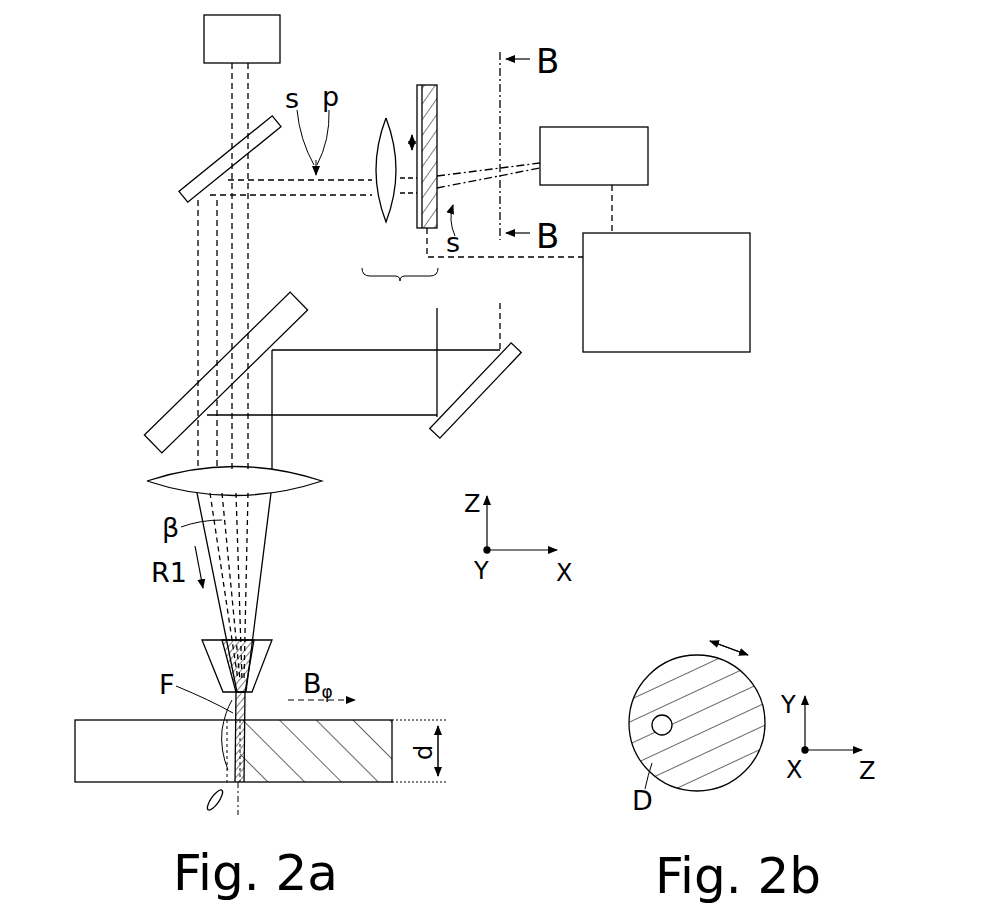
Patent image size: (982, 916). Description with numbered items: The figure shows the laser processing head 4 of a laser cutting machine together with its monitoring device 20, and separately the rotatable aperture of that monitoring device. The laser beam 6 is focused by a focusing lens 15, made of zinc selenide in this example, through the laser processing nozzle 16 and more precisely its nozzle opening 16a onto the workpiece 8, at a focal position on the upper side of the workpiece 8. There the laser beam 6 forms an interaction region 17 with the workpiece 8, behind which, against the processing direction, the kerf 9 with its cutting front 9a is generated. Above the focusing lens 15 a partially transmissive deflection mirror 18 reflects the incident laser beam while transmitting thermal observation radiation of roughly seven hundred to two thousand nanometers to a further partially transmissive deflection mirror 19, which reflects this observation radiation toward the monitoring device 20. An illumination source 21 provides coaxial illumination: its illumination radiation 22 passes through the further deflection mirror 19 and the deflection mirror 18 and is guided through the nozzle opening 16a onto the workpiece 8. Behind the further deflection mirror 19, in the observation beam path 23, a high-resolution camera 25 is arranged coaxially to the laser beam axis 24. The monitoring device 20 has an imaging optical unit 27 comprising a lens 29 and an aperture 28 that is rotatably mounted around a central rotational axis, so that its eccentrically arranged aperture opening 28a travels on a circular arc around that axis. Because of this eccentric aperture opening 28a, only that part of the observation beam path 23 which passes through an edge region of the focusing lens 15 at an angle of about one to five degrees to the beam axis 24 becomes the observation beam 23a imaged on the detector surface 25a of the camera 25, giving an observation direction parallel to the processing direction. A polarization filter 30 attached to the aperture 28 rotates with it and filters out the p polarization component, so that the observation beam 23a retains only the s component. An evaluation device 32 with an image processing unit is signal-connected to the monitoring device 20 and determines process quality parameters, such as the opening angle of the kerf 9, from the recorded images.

In FIG. 2a, the processing head 4 is at (120, 255).
In FIG. 2a, the laser beam 6 is at (340, 367).
In FIG. 2a, the workpiece 8 is at (333, 782).
In FIG. 2a, the kerf 9 is at (103, 733).
In FIG. 2a, the cutting front 9a is at (227, 768).
In FIG. 2a, the focusing lens 15 is at (158, 491).
In FIG. 2a, the laser processing nozzle 16 is at (203, 660).
In FIG. 2a, the nozzle opening 16a is at (255, 643).
In FIG. 2a, the interaction region 17 is at (227, 720).
In FIG. 2a, the partially transmissive deflection mirror 18 is at (178, 397).
In FIG. 2a, the further partially transmissive deflection mirror 19 is at (210, 170).
In FIG. 2a, the monitoring device 20 is at (553, 110).
In FIG. 2a, the illumination source 21 is at (215, 42).
In FIG. 2a, the illumination radiation 22 is at (232, 98).
In FIG. 2a, the observation beam path 23 is at (340, 218).
In FIG. 2a, the observation beam 23a is at (453, 177).
In FIG. 2a, the laser beam axis 24 is at (255, 530).
In FIG. 2a, the camera 25 is at (628, 137).
In FIG. 2a, the detector surface 25a is at (540, 190).
In FIG. 2a, the imaging optical unit 27 is at (400, 291).
In FIG. 2a, the aperture 28 is at (428, 88).
In FIG. 2b, the aperture 28 is at (703, 678).
In FIG. 2b, the aperture opening 28a is at (653, 720).
In FIG. 2a, the lens 29 is at (383, 145).
In FIG. 2a, the polarization filter 30 is at (417, 100).
In FIG. 2a, the evaluation device 32 is at (712, 240).